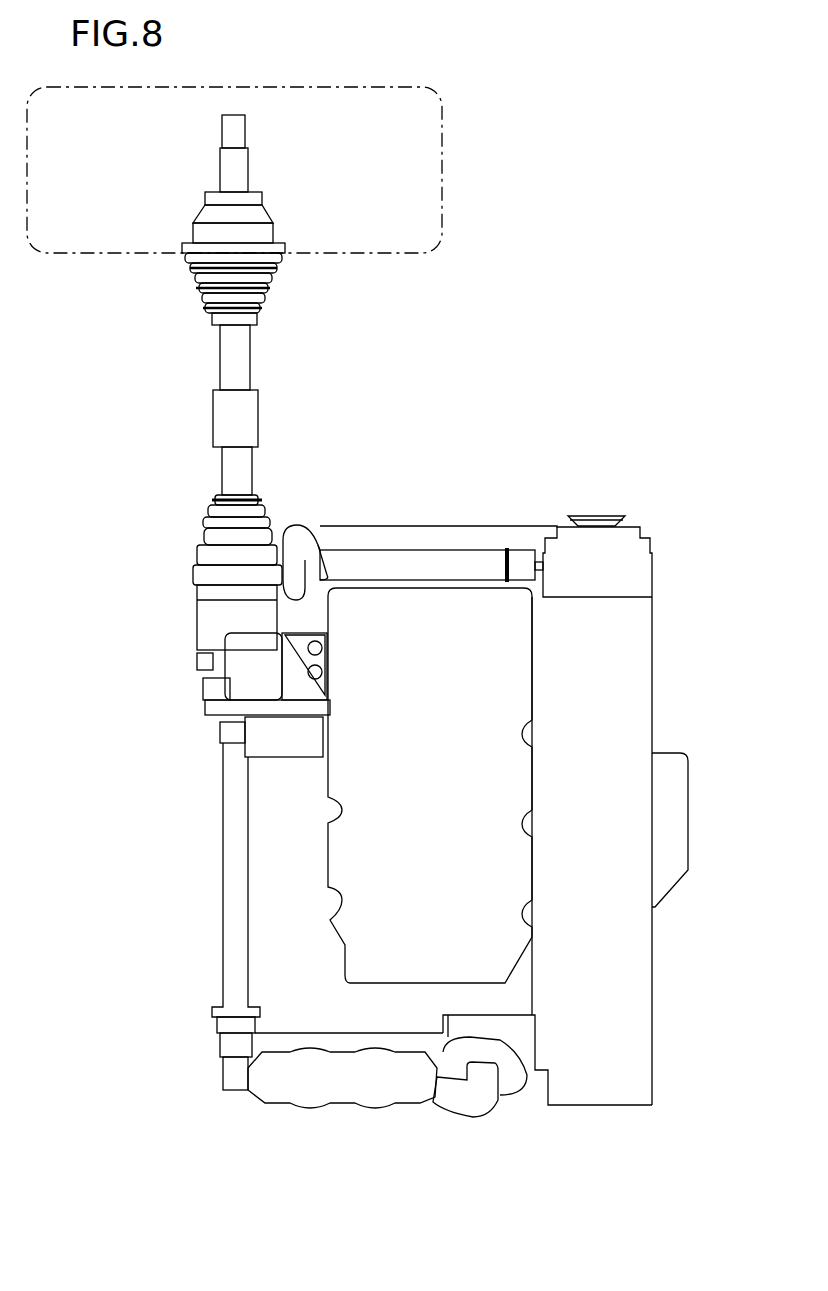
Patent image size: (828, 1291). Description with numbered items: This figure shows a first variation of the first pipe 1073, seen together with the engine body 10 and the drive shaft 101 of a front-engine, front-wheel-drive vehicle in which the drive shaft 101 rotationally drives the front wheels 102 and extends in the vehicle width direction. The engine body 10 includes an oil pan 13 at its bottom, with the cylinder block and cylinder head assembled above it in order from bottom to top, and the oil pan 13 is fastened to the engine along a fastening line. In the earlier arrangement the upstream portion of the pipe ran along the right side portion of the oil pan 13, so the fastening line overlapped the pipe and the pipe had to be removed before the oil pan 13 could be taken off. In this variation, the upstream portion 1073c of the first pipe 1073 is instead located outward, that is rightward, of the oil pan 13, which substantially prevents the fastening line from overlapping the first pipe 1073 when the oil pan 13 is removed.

The engine body 10 is at (652, 637).
The oil pan 13 is at (497, 780).
The drive shaft 101 is at (250, 359).
The front wheels 102 is at (442, 152).
The first pipe 1073 is at (423, 550).
The upstream portion of the first pipe 1073c is at (490, 562).